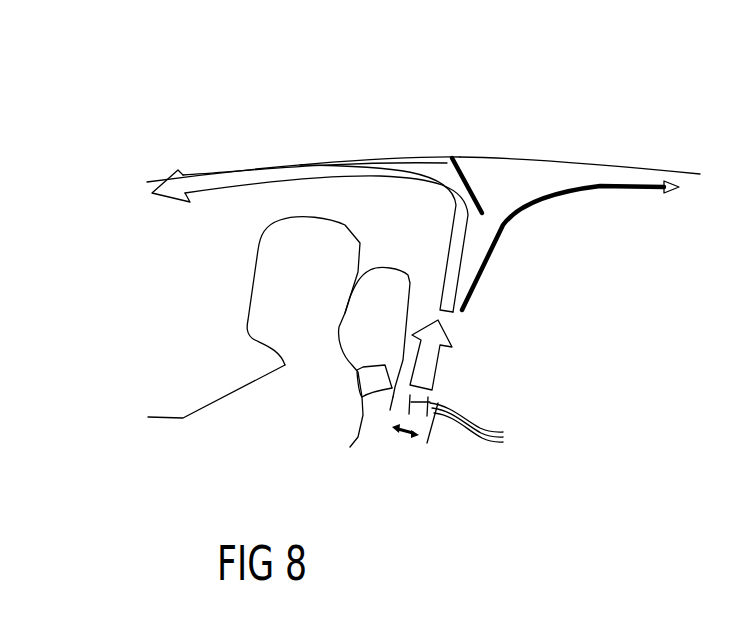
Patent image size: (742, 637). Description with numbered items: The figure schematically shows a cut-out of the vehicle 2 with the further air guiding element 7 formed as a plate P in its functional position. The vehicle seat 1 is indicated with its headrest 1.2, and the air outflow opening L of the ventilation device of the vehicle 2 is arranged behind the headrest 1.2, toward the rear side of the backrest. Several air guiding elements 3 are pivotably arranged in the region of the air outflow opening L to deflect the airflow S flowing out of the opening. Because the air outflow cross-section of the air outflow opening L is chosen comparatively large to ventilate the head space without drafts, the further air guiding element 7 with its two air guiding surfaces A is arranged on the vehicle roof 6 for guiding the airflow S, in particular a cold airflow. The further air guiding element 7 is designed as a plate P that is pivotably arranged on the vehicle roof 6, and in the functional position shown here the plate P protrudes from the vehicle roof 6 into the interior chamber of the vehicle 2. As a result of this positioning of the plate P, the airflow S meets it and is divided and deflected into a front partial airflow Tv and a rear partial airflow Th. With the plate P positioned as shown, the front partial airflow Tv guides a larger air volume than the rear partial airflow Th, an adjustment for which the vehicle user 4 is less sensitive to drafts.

The vehicle seat 1 is at (356, 377).
The headrest 1.2 is at (378, 303).
The vehicle 2 is at (415, 124).
The air guiding elements 3 is at (478, 430).
The vehicle user 4 is at (237, 412).
The vehicle roof 6 is at (560, 157).
The further air guiding element 7 is at (484, 149).
The plate P is at (467, 205).
The air guiding surfaces A is at (470, 164).
The airflow S is at (443, 337).
The air outflow opening L is at (447, 391).
The front partial airflow Tv is at (205, 176).
The rear partial airflow Th is at (630, 182).